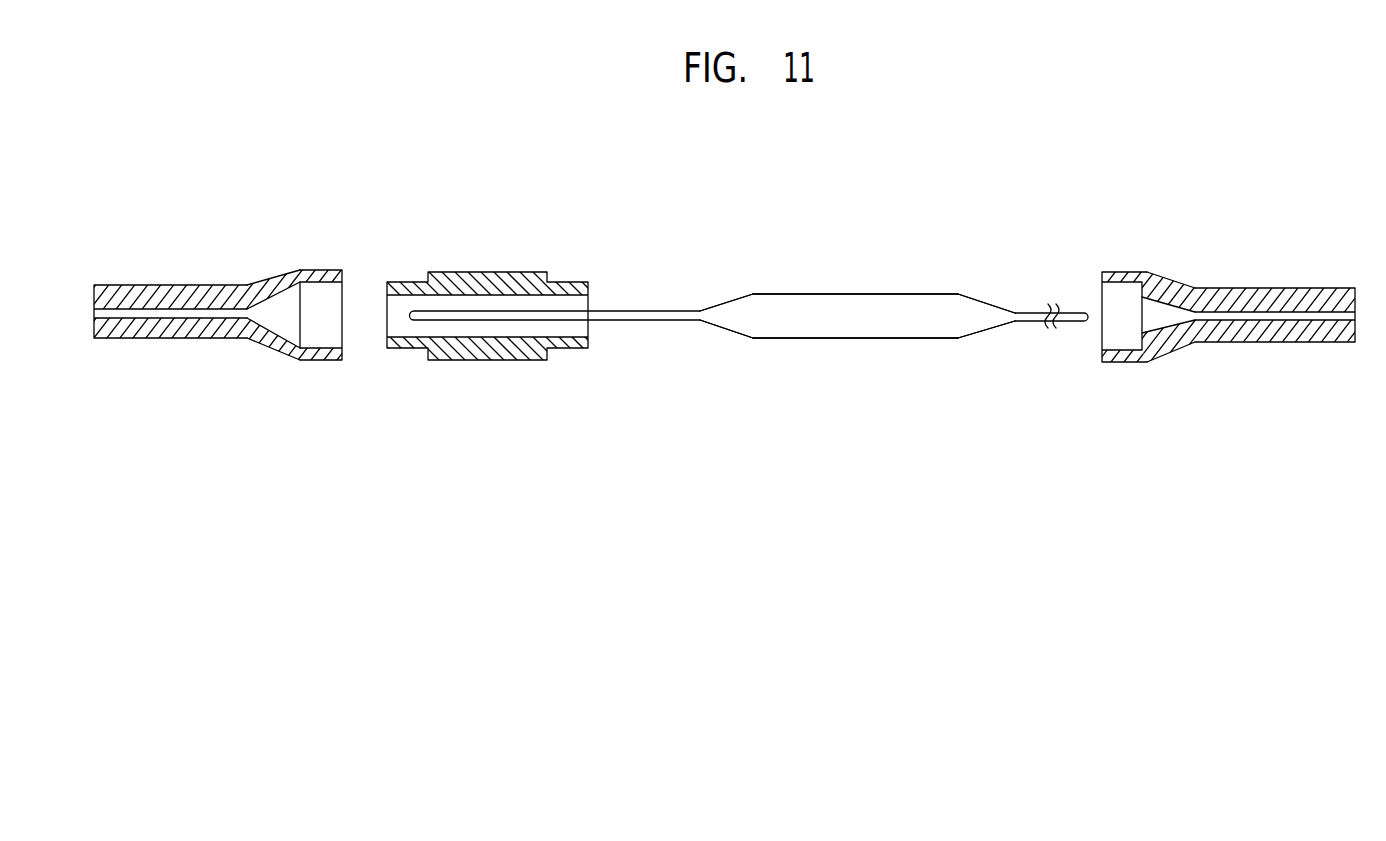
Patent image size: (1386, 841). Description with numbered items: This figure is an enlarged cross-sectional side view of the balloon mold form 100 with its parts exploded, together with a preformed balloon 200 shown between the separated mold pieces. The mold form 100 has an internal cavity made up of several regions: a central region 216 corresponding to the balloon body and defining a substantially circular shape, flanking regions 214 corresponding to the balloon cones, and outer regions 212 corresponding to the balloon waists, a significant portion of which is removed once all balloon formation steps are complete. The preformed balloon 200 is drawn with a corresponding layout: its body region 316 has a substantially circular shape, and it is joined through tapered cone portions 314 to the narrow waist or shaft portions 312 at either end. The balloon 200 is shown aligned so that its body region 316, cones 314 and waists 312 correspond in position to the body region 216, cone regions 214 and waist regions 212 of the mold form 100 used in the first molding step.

The balloon mold form 100 is at (501, 380).
The preformed balloon 200 is at (838, 353).
The regions corresponding to balloon waists 212 is at (207, 306).
The regions corresponding to balloon cones 214 is at (273, 298).
The region corresponding to balloon body 216 is at (331, 305).
The catheter shaft 312 is at (677, 310).
The balloon taper (cone) 314 is at (730, 297).
The body region 316 is at (858, 293).